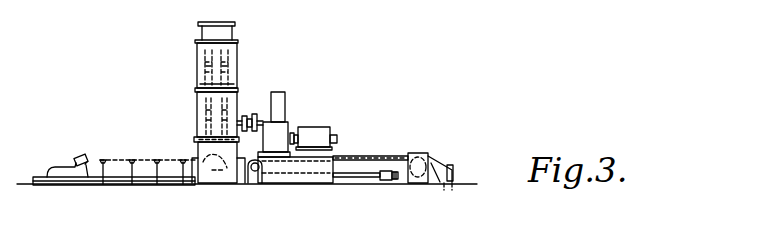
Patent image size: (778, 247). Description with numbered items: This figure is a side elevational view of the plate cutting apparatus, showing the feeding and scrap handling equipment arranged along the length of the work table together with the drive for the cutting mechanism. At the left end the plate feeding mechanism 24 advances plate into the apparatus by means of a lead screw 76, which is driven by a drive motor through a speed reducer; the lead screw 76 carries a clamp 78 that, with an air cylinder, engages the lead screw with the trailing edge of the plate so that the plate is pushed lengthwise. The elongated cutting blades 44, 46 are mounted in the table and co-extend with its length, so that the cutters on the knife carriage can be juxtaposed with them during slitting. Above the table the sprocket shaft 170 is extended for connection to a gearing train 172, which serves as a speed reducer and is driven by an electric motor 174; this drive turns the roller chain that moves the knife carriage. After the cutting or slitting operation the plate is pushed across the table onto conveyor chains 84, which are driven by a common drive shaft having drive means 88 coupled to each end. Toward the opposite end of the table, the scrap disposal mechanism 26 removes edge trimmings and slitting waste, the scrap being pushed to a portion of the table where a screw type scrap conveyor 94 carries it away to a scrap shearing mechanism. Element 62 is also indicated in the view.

The plate feeding mechanism 24 is at (139, 150).
The scrap disposal mechanism 26 is at (383, 153).
The cutting blade 44 is at (196, 188).
The cutting blade 46 is at (216, 168).
The base plate 62 is at (125, 186).
The lead screw 76 is at (60, 165).
The clamp 78 is at (88, 158).
The conveyor chain 84 is at (256, 178).
The drive means 88 is at (388, 181).
The screw type scrap conveyor 94 is at (430, 155).
The sprocket shaft 170 is at (192, 112).
The gearing train 172 is at (277, 92).
The electric motor 174 is at (313, 132).